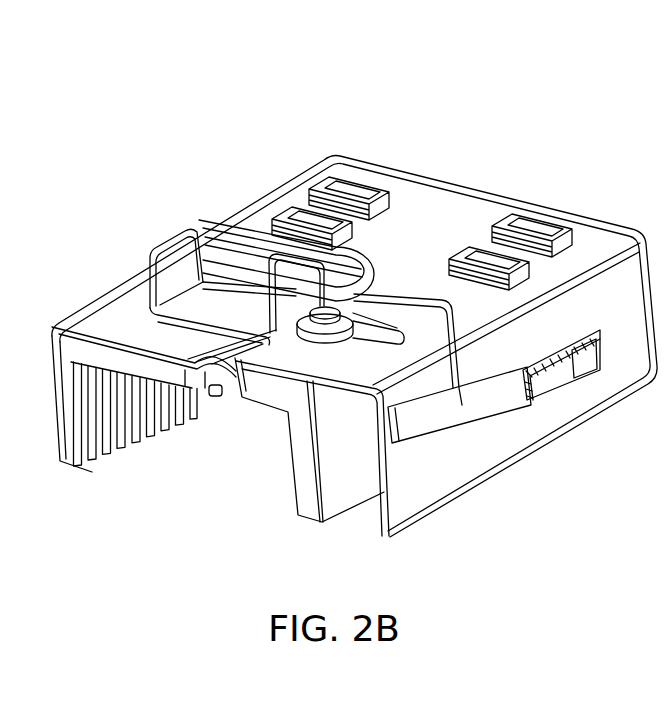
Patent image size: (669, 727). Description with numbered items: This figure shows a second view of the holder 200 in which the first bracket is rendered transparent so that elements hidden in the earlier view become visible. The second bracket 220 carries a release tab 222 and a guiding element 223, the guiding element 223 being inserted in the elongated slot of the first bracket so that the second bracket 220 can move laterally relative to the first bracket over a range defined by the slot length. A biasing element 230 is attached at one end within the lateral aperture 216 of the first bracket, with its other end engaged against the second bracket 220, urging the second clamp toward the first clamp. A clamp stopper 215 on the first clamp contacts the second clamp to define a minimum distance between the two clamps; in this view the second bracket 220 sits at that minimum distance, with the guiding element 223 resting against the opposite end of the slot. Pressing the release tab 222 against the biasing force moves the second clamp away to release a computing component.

The holder 200 is at (412, 147).
The clamp stopper 215 is at (217, 368).
The lateral aperture 216 is at (577, 357).
The second bracket 220 is at (337, 455).
The release tab 222 is at (173, 257).
The guiding element 223 is at (358, 336).
The biasing element 230 is at (510, 390).